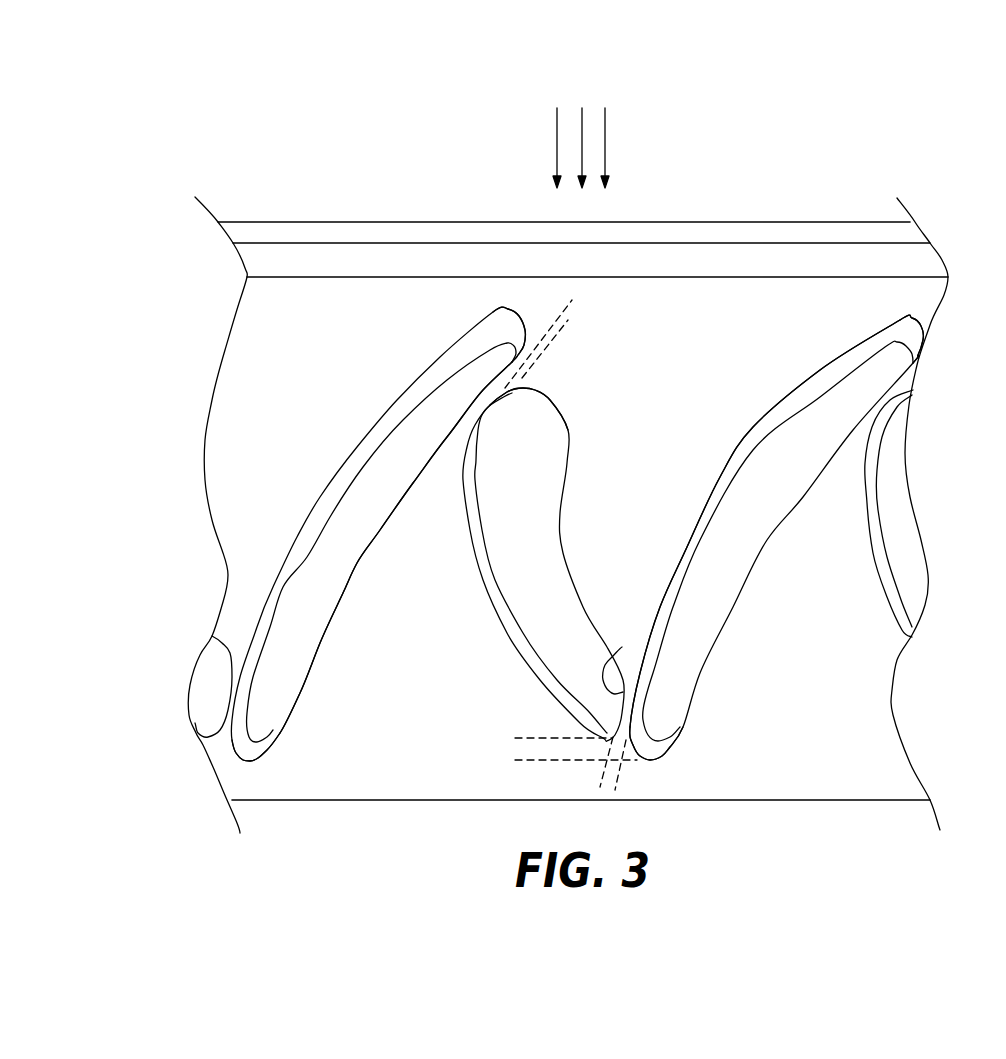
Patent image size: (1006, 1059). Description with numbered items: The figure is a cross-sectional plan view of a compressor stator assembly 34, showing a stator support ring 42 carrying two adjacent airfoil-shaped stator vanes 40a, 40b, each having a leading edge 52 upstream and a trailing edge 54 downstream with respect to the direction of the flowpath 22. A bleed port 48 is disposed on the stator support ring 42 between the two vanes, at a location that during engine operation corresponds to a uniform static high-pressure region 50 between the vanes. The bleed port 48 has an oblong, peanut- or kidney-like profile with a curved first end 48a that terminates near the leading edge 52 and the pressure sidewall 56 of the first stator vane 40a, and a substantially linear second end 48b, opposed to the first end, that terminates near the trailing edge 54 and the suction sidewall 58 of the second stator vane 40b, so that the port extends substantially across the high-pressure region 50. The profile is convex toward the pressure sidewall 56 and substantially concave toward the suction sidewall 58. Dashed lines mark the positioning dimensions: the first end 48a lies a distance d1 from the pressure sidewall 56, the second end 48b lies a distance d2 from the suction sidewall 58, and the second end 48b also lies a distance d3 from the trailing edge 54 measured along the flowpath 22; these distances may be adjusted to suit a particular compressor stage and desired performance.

The flowpath 22 is at (622, 127).
The stator assembly 34 is at (801, 184).
The stator support ring 42 is at (258, 338).
The first stator vane 40a is at (370, 534).
The second stator vane 40b is at (765, 534).
The bleed port 48 is at (548, 576).
The first end 48a is at (524, 390).
The second end 48b is at (622, 647).
The uniform static high-pressure region 50 is at (678, 374).
The leading edge 52 is at (510, 326).
The trailing edge 54 is at (253, 761).
The pressure sidewall 56 is at (343, 593).
The suction sidewall 58 is at (707, 507).
The distance d1 is at (568, 313).
The distance d2 is at (600, 783).
The distance d3 is at (525, 752).